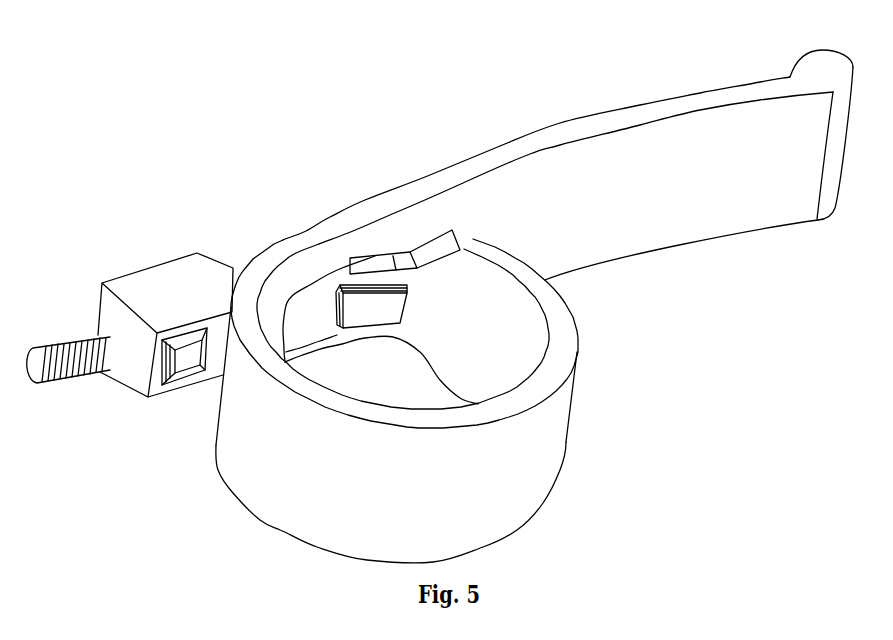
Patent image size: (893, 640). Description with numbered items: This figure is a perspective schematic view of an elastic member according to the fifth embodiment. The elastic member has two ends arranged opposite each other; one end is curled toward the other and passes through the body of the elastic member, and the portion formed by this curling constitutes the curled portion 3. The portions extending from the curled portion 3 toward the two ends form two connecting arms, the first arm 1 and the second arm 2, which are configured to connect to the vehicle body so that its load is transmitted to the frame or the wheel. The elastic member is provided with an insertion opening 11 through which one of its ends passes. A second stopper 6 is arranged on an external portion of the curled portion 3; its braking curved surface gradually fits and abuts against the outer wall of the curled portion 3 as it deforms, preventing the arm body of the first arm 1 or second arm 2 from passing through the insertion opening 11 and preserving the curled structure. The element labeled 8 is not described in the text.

The first arm 1 is at (203, 287).
The second arm 2 is at (628, 193).
The curled portion 3 is at (481, 295).
The second stopper 6 is at (181, 360).
The locking block 8 is at (373, 303).
The insertion opening 11 is at (352, 257).